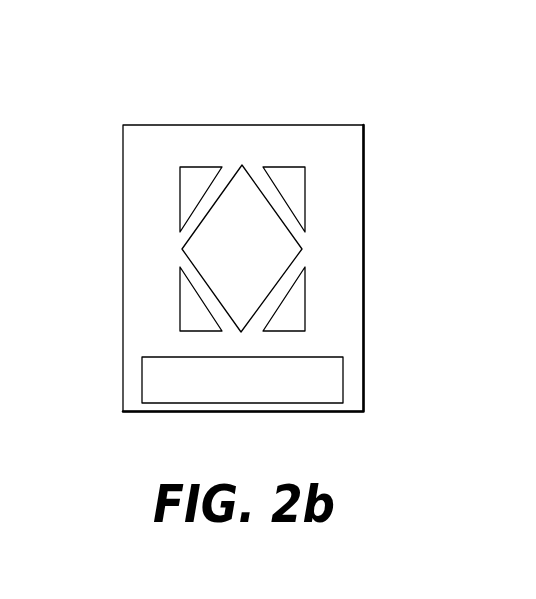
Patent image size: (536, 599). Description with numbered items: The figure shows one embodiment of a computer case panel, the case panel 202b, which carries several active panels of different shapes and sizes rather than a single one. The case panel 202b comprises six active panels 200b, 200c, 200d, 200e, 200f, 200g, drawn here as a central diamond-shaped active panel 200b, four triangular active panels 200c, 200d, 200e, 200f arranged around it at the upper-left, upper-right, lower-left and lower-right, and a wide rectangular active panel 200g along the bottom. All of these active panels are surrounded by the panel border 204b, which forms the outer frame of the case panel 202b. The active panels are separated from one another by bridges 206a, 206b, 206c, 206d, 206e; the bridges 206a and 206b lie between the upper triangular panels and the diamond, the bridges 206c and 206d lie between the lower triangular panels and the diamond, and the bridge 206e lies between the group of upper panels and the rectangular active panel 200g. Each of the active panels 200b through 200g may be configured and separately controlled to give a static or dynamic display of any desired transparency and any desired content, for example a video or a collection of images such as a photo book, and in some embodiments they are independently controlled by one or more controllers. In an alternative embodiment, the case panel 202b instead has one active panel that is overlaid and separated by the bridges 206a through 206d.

The case panel 202b is at (106, 170).
The panel border 204b is at (343, 175).
The active panel 200b is at (243, 187).
The active panel 200c is at (197, 168).
The active panel 200d is at (287, 175).
The active panel 200e is at (192, 305).
The active panel 200f is at (291, 317).
The active panel 200g is at (245, 388).
The bridge 206a is at (200, 207).
The bridge 206b is at (285, 208).
The bridge 206c is at (202, 283).
The bridge 206d is at (275, 293).
The bridge 206e is at (203, 348).